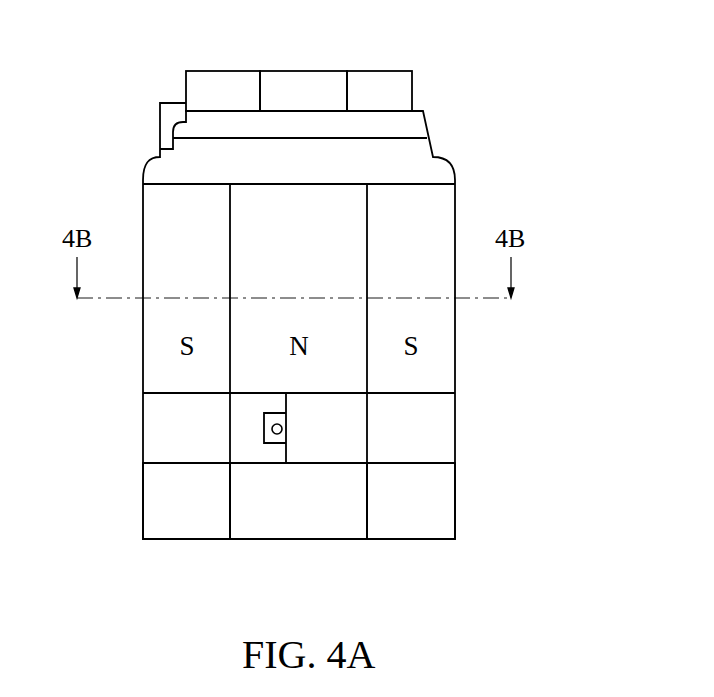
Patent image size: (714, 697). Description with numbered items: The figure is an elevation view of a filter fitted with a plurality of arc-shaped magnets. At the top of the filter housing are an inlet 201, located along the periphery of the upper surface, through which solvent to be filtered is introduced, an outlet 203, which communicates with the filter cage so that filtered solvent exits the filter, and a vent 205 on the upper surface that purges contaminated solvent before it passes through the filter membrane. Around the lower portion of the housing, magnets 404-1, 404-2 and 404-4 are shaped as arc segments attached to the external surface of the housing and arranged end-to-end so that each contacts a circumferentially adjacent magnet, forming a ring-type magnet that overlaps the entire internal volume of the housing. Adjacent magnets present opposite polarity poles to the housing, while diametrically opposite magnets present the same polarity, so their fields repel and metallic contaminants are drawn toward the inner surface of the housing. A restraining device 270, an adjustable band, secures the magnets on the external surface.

The inlet 201 is at (218, 83).
The outlet 203 is at (305, 83).
The vent 205 is at (381, 83).
The restraining device 270 is at (440, 430).
The magnet 404-1 is at (440, 504).
The magnet 404-2 is at (158, 506).
The magnet 404-4 is at (303, 519).